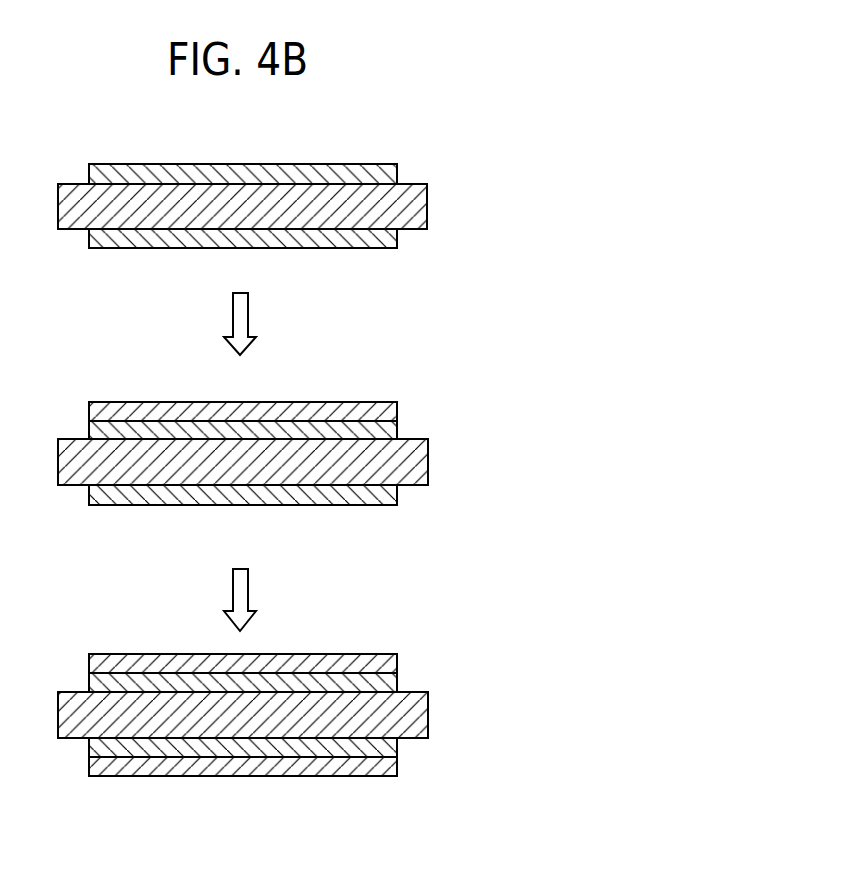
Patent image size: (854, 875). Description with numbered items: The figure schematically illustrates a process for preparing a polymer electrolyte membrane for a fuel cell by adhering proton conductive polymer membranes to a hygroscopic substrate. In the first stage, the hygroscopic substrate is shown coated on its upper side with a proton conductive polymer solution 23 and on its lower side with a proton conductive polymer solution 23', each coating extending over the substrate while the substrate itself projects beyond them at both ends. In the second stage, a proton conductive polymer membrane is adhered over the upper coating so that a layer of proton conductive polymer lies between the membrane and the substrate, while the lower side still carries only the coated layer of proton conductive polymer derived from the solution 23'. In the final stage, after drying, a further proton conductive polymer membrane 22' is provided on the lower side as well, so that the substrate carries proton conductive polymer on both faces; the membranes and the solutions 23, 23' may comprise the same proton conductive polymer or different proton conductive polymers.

The proton conductive polymer solution 23 is at (268, 159).
The proton conductive polymer solution 23' is at (278, 248).
The proton conductive polymer membrane 22' is at (286, 782).